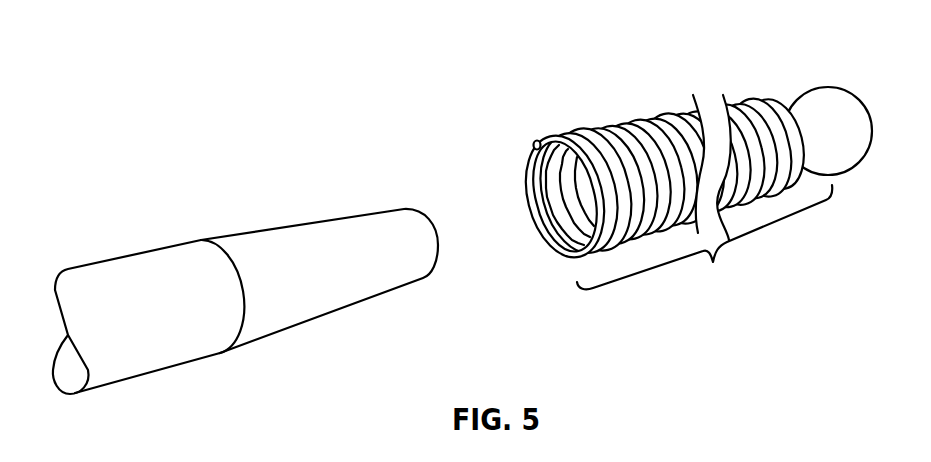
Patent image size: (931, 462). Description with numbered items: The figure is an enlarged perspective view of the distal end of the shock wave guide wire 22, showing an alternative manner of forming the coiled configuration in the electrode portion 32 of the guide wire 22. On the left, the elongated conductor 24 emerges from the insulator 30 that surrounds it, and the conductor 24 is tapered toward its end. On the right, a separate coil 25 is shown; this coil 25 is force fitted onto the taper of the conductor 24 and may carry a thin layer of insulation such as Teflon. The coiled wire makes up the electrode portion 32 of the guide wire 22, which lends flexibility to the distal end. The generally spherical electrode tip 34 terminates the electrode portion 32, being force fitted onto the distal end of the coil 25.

The guide wire 22 is at (228, 279).
The elongated conductor 24 is at (362, 238).
The coil 25 is at (555, 243).
The insulator 30 is at (138, 253).
The electrode portion 32 is at (687, 191).
The electrode tip 34 is at (832, 85).